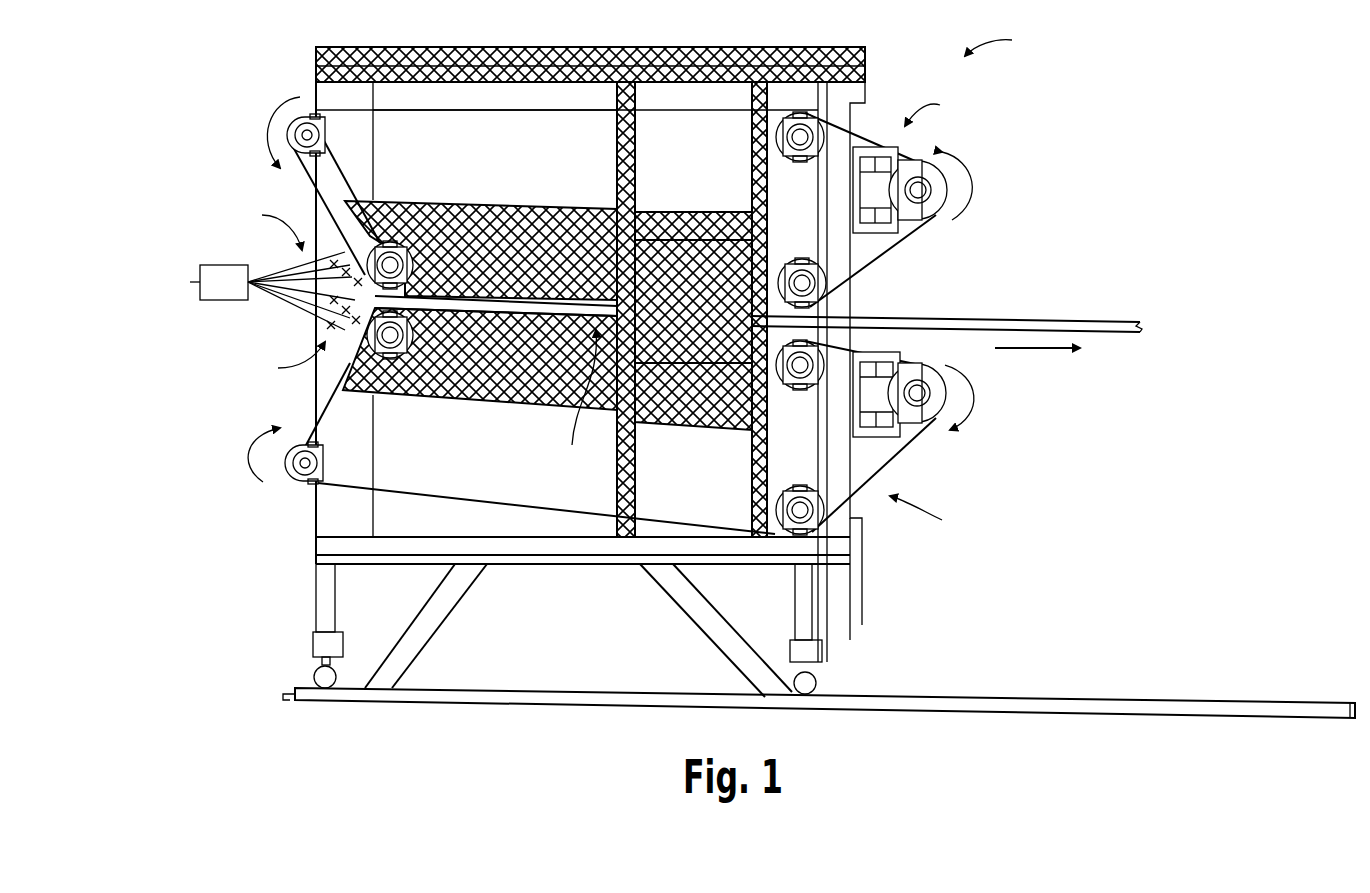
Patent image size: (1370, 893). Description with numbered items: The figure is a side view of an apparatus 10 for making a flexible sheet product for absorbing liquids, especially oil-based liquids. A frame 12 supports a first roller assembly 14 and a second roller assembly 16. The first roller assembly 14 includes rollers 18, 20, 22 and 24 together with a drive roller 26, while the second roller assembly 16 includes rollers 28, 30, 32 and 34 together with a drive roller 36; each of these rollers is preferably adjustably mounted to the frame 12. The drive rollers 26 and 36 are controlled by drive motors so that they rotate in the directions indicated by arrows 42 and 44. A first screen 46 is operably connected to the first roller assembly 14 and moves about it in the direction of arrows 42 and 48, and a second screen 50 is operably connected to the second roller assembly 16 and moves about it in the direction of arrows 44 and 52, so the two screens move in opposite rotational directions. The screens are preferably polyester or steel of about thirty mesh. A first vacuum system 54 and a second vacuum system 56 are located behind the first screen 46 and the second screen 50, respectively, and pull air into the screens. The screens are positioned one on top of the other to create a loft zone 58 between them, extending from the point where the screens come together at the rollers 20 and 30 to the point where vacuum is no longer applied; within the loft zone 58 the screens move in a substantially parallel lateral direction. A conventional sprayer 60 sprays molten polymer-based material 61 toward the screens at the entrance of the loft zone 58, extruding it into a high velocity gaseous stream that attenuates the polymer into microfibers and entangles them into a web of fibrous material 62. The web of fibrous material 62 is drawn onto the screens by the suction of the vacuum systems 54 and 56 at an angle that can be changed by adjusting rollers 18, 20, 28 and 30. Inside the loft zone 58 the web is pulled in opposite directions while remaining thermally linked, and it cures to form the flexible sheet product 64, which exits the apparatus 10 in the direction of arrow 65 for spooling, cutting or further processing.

The apparatus 10 is at (1009, 42).
The frame 12 is at (316, 542).
The first roller assembly 14 is at (888, 199).
The second roller assembly 16 is at (888, 436).
The roller 18 is at (327, 133).
The roller 20 is at (415, 200).
The roller 22 is at (792, 256).
The roller 24 is at (772, 136).
The drive roller 26 is at (926, 208).
The roller 28 is at (325, 462).
The roller 30 is at (403, 392).
The roller 32 is at (786, 392).
The roller 34 is at (772, 510).
The drive roller 36 is at (942, 405).
The arrow 42 is at (975, 195).
The arrow 44 is at (975, 388).
The first screen 46 is at (517, 112).
The arrow 48 is at (262, 135).
The second screen 50 is at (450, 490).
The arrow 52 is at (263, 480).
The first vacuum system 54 is at (516, 266).
The second vacuum system 56 is at (465, 373).
The loft zone 58 is at (575, 401).
The sprayer 60 is at (200, 280).
The molten polymer-based material 61 is at (290, 240).
The web of fibrous material 62 is at (302, 321).
The flexible sheet product 64 is at (1090, 318).
The arrow 65 is at (1080, 356).